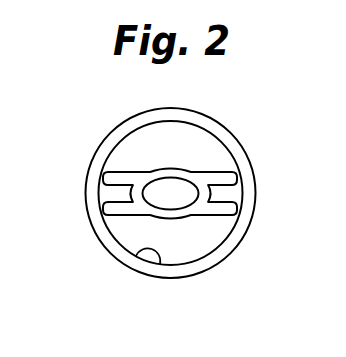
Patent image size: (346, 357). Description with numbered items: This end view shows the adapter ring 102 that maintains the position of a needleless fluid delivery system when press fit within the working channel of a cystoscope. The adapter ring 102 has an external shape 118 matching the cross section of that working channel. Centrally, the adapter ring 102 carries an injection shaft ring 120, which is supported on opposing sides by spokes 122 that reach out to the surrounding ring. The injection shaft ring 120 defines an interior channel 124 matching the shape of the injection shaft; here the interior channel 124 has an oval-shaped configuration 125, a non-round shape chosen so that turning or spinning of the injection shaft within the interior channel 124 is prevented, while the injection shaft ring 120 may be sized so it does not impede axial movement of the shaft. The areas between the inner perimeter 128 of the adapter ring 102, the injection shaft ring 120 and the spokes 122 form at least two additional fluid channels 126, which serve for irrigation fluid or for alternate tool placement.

The adapter ring 102 is at (262, 146).
The external shape 118 is at (182, 108).
The injection shaft ring 120 is at (192, 172).
The spokes 122 is at (118, 195).
The interior channel 124 is at (180, 200).
The oval-shaped configuration 125 is at (160, 188).
The additional fluid channels 126 is at (153, 135).
The inner perimeter 128 is at (160, 268).